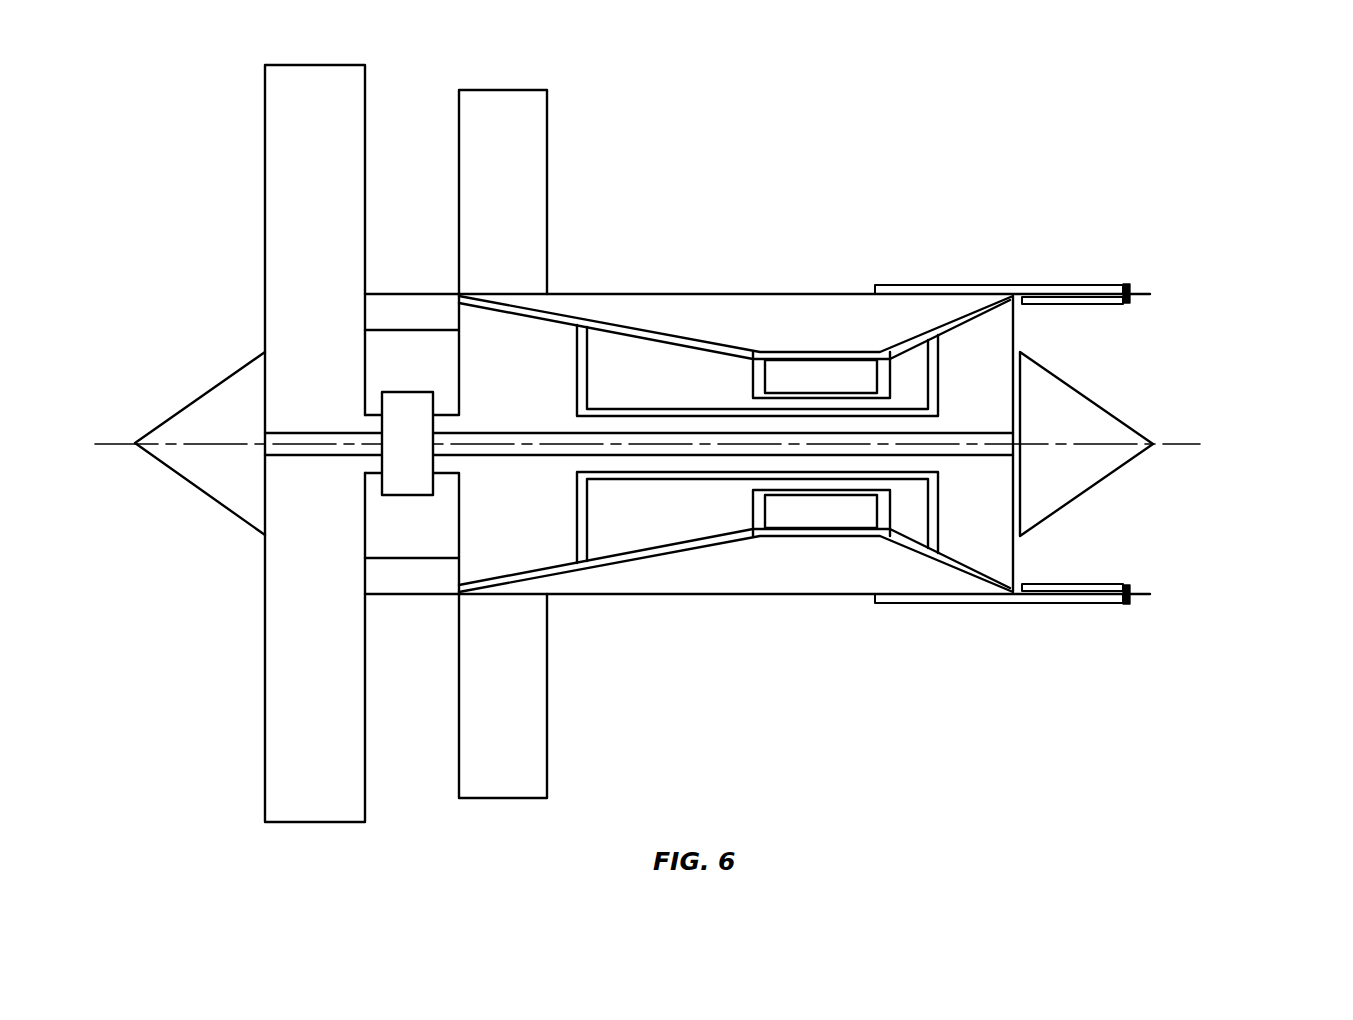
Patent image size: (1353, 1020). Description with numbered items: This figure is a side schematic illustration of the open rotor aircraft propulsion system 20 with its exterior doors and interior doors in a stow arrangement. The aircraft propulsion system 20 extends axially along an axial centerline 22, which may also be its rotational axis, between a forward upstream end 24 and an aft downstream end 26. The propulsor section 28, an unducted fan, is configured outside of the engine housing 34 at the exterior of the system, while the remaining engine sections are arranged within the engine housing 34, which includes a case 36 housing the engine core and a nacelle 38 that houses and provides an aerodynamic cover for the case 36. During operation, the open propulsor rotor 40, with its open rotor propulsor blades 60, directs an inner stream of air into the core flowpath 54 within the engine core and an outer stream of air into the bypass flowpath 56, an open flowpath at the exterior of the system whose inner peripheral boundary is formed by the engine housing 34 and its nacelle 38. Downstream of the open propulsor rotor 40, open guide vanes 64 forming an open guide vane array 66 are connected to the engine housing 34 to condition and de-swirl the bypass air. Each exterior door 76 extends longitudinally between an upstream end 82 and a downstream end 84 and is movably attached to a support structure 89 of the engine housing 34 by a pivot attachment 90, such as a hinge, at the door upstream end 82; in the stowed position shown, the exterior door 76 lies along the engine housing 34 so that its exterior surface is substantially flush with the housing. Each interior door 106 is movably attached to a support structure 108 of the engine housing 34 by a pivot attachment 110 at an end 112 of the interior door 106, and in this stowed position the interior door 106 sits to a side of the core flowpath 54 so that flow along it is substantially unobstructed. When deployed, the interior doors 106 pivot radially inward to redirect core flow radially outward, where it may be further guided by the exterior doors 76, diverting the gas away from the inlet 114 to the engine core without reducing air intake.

The aircraft propulsion system 20 is at (138, 100).
The axial centerline 22 is at (110, 447).
The upstream end 24 is at (134, 441).
The downstream end 26 is at (1153, 443).
The propulsor section 28 is at (246, 832).
The engine housing 34 is at (628, 282).
The case 36 is at (587, 320).
The nacelle 38 is at (676, 294).
The open propulsor rotor 40 is at (244, 592).
The core flowpath 54 is at (426, 325).
The bypass flowpath 56 is at (420, 248).
The open rotor propulsor blades 60 is at (265, 143).
The open guide vanes 64 is at (520, 197).
The open guide vane array 66 is at (566, 114).
The exterior door 76 is at (1040, 272).
The upstream end 82 is at (875, 284).
The downstream end 84 is at (1128, 283).
The support structure 89 is at (1186, 294).
The pivot attachment 90 is at (1132, 288).
The interior door 106 is at (1068, 318).
The support structure 108 is at (1186, 594).
The pivot attachment 110 is at (1132, 300).
The end 112 is at (1115, 305).
The inlet 114 is at (364, 313).